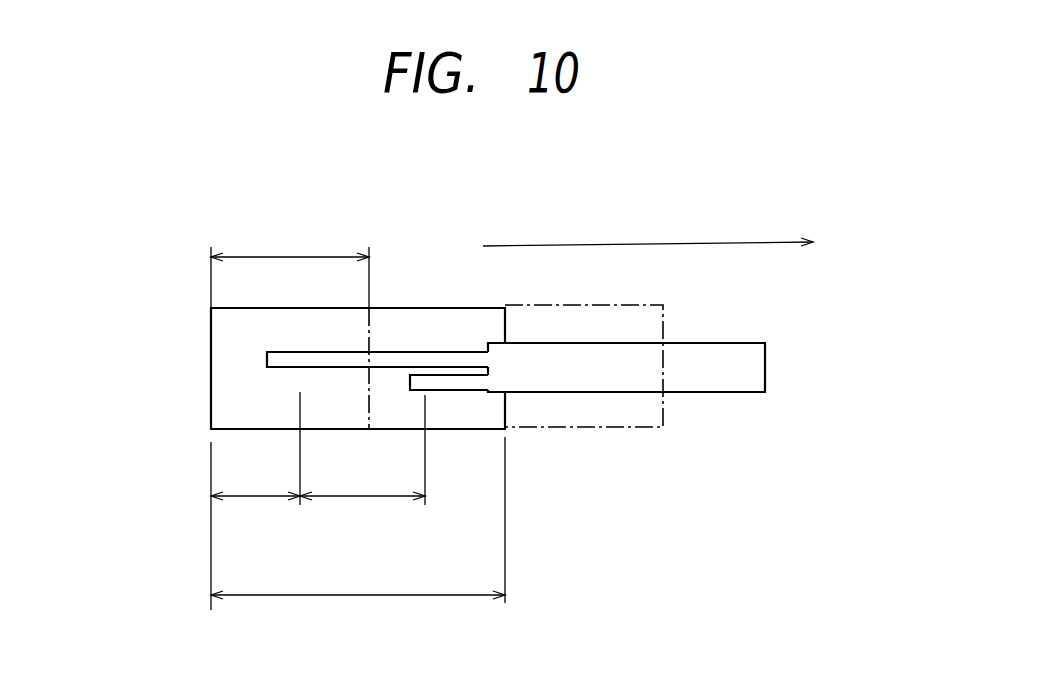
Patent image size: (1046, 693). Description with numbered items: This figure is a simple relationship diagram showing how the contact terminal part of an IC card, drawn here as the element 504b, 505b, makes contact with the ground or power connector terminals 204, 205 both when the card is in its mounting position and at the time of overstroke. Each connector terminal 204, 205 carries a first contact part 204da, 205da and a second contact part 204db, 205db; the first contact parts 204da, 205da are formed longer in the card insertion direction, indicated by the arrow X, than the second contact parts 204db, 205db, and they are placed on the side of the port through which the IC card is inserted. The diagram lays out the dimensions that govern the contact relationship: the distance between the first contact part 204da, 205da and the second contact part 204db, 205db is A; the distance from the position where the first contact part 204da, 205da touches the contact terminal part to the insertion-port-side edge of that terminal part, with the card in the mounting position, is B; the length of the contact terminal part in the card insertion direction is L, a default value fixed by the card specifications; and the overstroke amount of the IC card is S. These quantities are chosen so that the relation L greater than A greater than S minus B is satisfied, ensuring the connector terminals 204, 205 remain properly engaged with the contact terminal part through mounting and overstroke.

The housing / body 504b is at (437, 292).
The housing / body 505b is at (457, 318).
The ground or power connector terminal 204 is at (701, 348).
The ground or power connector terminal 205 is at (768, 372).
The first contact part 204da is at (265, 455).
The first contact part 205da is at (295, 375).
The second contact part 204db is at (561, 467).
The second contact part 205db is at (435, 390).
The overstroke amount S is at (285, 257).
The card insertion direction X is at (635, 243).
The distance between first and second contact parts A is at (369, 499).
The distance from contact position to insertion port side edge B is at (258, 499).
The length of contact terminal part L is at (337, 597).